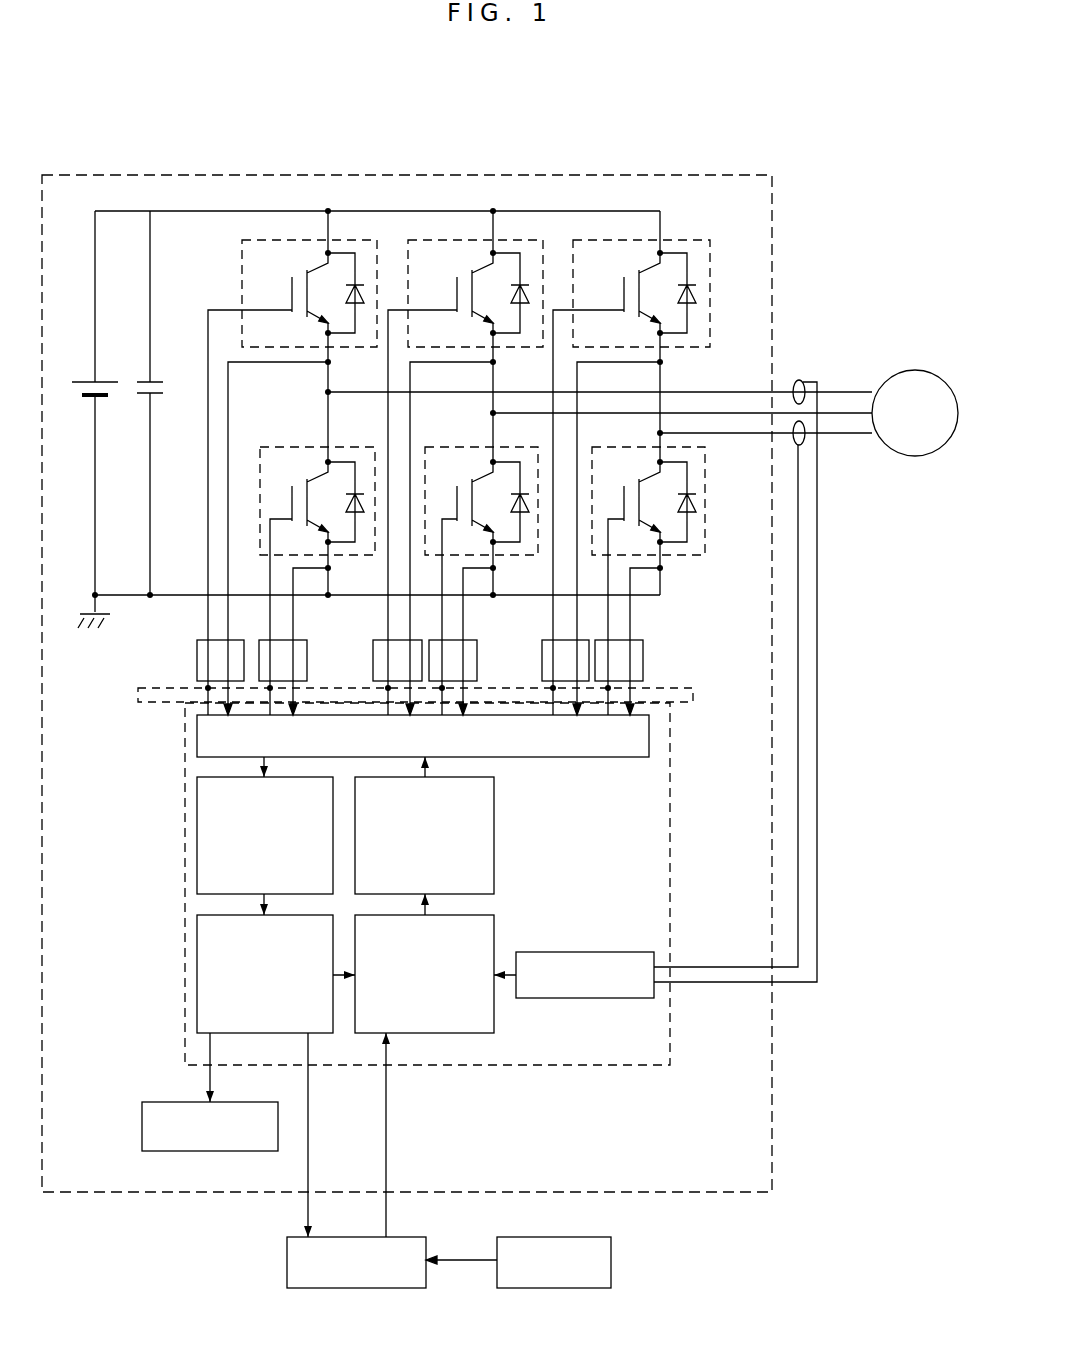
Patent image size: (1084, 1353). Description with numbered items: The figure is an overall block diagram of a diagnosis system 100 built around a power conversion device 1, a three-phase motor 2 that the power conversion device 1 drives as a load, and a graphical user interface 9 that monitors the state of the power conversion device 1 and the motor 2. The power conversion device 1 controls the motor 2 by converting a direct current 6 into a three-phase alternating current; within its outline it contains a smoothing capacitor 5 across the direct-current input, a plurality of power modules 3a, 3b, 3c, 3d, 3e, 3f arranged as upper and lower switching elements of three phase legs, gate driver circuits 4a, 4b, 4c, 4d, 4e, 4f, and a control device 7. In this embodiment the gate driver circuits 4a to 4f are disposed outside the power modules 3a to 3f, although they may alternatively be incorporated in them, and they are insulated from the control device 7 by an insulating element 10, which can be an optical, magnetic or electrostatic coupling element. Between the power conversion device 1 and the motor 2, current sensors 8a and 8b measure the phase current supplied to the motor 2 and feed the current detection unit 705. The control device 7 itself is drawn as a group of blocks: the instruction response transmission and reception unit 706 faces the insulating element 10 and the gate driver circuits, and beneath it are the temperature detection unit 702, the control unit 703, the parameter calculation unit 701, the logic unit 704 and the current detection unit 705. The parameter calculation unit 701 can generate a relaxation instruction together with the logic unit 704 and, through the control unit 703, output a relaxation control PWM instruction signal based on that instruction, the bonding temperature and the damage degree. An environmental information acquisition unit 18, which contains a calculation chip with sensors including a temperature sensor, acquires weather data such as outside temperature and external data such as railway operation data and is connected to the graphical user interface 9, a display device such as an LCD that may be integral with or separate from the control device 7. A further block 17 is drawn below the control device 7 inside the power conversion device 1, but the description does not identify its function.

The diagnosis system 100 is at (645, 122).
The power conversion device 1 is at (772, 215).
The three-phase motor 2 is at (912, 370).
The power module 3a is at (708, 240).
The power module 3b is at (543, 240).
The power module 3c is at (376, 240).
The power module 3d is at (310, 447).
The power module 3e is at (472, 447).
The power module 3f is at (630, 447).
The gate driver circuit 4a is at (542, 648).
The gate driver circuit 4b is at (373, 648).
The gate driver circuit 4c is at (197, 648).
The gate driver circuit 4d is at (307, 672).
The gate driver circuit 4e is at (477, 672).
The gate driver circuit 4f is at (643, 672).
The smoothing capacitor 5 is at (149, 381).
The direct current 6 is at (103, 398).
The control device 7 is at (610, 1065).
The current sensor 8a is at (799, 380).
The current sensor 8b is at (805, 446).
The graphical user interface 9 is at (287, 1260).
The insulating element 10 is at (138, 695).
The storage unit 17 is at (142, 1103).
The environmental information acquisition unit 18 is at (611, 1262).
The parameter calculation unit 701 is at (197, 970).
The temperature detection unit 702 is at (197, 828).
The control unit 703 is at (494, 862).
The logic unit 704 is at (494, 1008).
The current detection unit 705 is at (654, 995).
The instruction response transmission and reception unit 706 is at (197, 740).